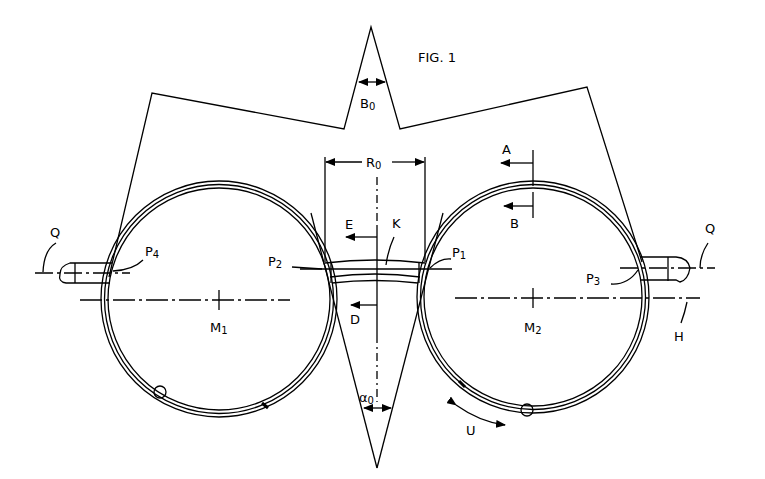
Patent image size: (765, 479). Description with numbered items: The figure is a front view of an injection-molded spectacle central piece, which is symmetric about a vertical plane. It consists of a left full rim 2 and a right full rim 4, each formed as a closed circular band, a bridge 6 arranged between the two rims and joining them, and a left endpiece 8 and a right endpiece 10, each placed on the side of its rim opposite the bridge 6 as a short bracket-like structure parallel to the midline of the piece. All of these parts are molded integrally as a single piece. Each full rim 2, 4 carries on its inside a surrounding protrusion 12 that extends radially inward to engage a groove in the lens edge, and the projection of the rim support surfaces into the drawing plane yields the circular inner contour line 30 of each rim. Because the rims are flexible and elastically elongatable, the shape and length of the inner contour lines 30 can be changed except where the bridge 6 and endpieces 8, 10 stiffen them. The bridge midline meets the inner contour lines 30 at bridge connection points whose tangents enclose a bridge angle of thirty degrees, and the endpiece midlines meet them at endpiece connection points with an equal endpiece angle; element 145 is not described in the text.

The left full rim 2 is at (116, 361).
The right full rim 4 is at (606, 398).
The bridge 6 is at (396, 285).
The left endpiece 8 is at (76, 290).
The right endpiece 10 is at (656, 262).
The surrounding protrusion 12 is at (157, 397).
The inner contour line 30 is at (266, 409).
The center line 145 is at (378, 362).